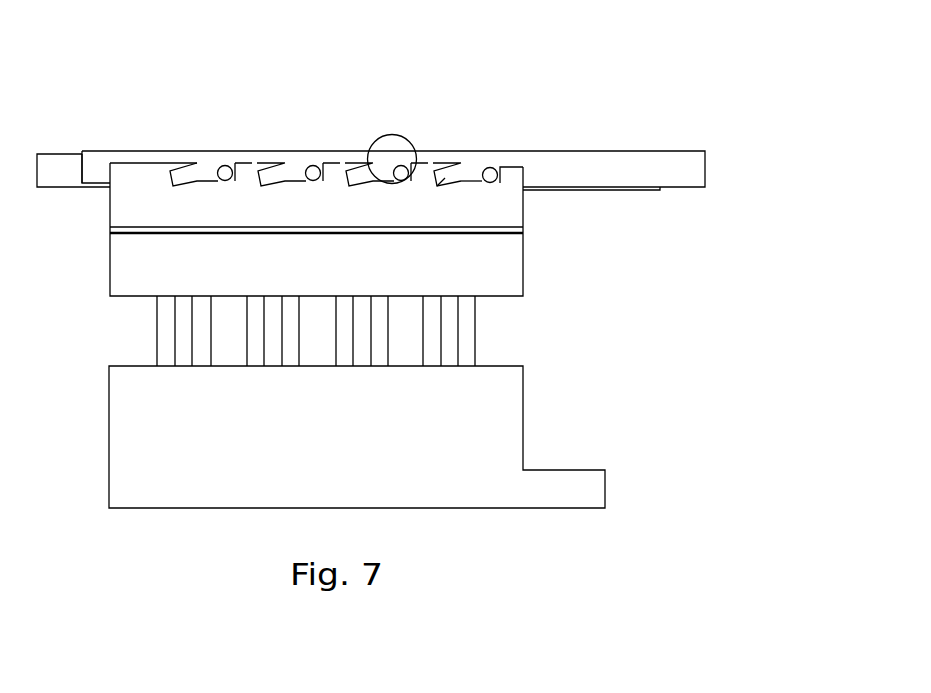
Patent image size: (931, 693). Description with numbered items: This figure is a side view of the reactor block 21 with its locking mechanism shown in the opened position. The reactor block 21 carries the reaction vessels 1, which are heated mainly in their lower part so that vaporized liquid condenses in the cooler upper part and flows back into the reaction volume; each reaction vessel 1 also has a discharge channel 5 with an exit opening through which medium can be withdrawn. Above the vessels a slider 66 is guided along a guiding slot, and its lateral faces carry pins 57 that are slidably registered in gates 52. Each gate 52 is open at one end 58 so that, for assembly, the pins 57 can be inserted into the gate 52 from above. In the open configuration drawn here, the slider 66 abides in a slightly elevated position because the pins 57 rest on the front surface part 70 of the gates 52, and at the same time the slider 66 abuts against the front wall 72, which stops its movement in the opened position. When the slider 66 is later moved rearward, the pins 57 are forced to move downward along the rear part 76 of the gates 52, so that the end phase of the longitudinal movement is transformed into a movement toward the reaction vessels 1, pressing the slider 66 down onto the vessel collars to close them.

The reaction vessel 1 is at (467, 319).
The discharge channel 5 is at (448, 343).
The reactor block 21 is at (650, 555).
The gate 52 is at (460, 163).
The pin 57 is at (496, 169).
The open end 58 is at (397, 135).
The slider 66 is at (665, 167).
The front surface part 70 is at (455, 185).
The front wall 72 is at (502, 166).
The rear part 76 is at (458, 188).